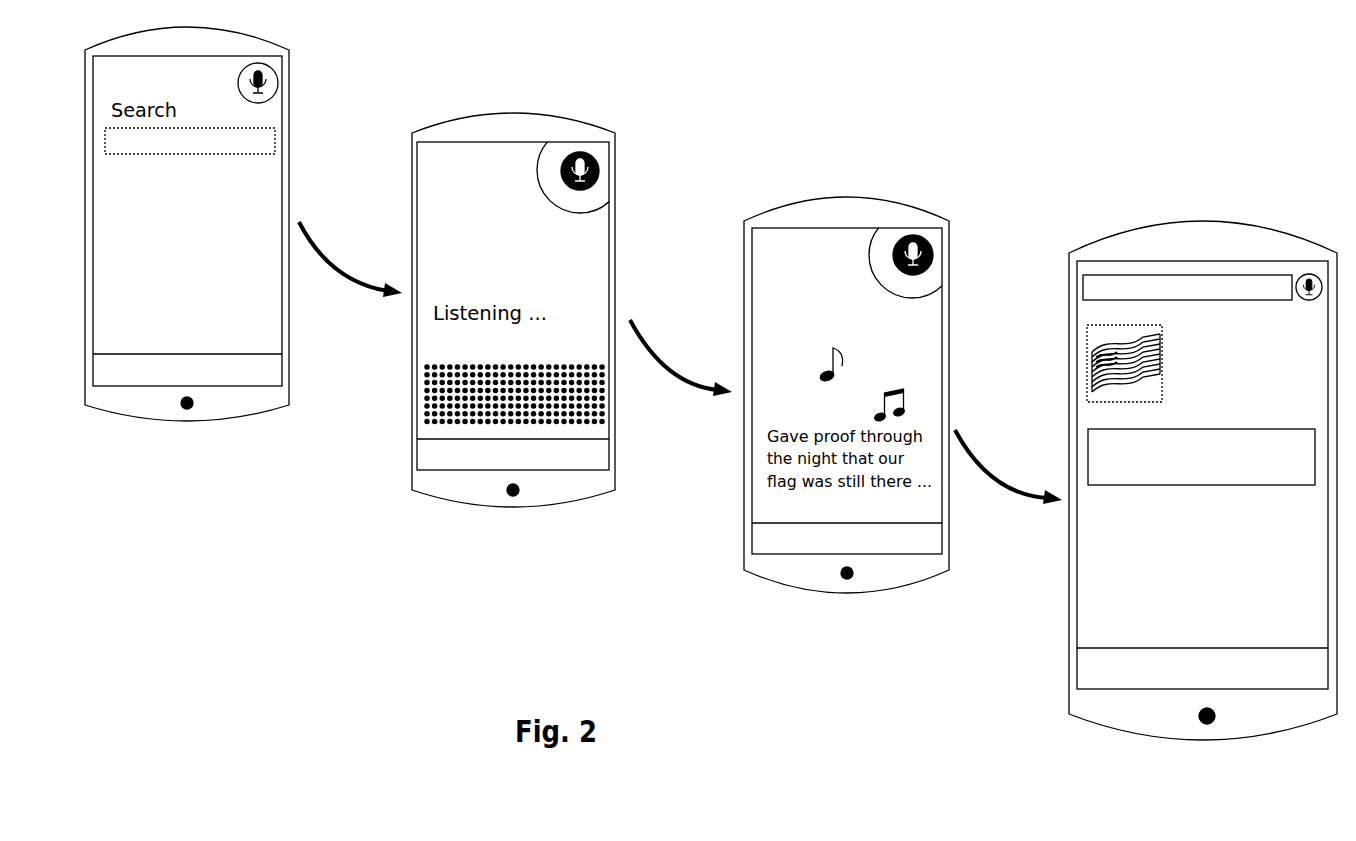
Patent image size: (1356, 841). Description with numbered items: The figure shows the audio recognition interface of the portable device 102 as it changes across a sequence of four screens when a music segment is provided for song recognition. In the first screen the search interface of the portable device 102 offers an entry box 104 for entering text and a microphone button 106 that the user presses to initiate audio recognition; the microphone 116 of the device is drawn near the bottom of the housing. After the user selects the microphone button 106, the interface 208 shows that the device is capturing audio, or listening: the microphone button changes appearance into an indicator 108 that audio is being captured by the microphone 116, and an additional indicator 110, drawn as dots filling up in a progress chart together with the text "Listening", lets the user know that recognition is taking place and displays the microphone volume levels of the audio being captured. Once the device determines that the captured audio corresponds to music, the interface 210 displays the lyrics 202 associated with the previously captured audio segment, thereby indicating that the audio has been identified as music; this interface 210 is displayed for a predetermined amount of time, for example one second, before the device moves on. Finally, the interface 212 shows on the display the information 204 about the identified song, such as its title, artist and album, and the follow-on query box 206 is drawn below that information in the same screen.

The portable device 102 is at (257, 402).
The entry box 104 is at (117, 135).
The microphone button 106 is at (238, 83).
The microphone 116 is at (190, 408).
The indicator 108 is at (555, 178).
The interface 208 is at (593, 247).
The indicator 110 is at (562, 349).
The lyrics 202 is at (787, 391).
The interface 210 is at (933, 335).
The information 204 is at (1300, 361).
The follow-up query box 206 is at (1293, 470).
The interface 212 is at (1093, 608).